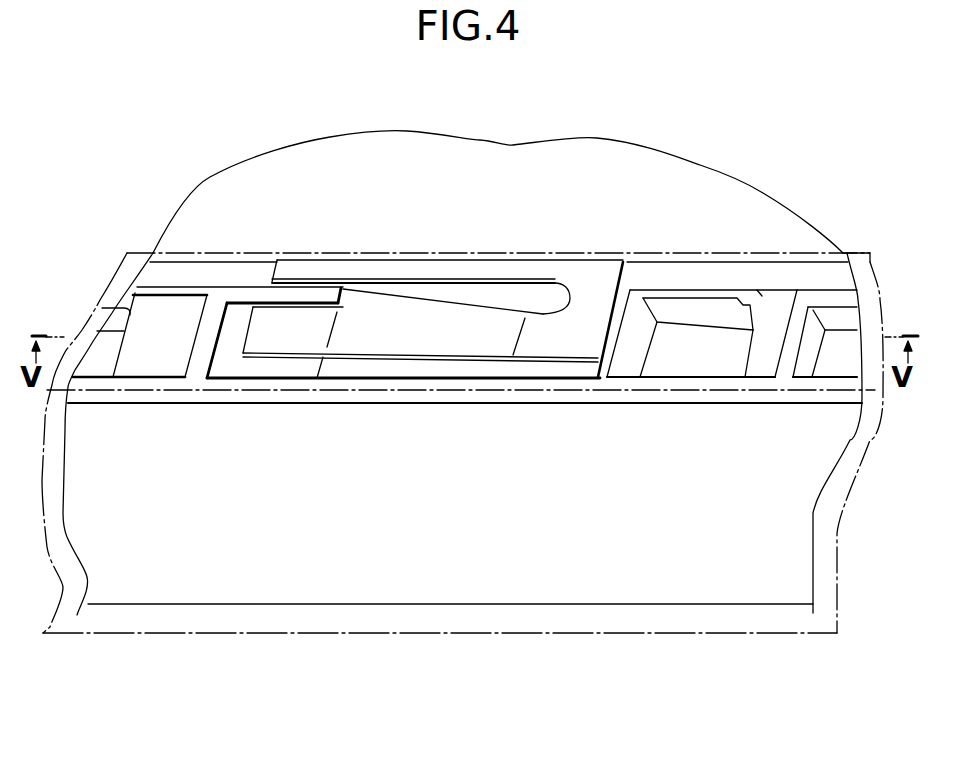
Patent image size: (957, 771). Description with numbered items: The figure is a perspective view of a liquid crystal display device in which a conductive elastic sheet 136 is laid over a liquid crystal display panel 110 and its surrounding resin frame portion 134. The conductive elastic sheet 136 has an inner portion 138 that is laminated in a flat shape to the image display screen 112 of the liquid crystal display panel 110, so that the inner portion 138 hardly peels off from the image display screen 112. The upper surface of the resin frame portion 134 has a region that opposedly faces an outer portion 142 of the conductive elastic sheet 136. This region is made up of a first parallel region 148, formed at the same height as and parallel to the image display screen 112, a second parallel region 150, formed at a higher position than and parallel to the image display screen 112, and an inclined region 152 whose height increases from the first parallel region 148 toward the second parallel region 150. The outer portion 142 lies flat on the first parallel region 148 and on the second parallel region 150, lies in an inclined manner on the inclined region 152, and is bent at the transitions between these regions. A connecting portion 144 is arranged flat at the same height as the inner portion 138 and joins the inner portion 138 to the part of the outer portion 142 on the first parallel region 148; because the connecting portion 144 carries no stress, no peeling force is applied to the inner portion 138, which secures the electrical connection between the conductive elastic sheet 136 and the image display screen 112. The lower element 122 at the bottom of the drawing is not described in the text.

The liquid crystal display panel 110 is at (697, 180).
The image display screen 112 is at (404, 211).
The bottom wall 122 is at (127, 633).
The resin frame portion 134 is at (212, 308).
The conductive elastic sheet 136 is at (548, 365).
The inner portion 138 is at (592, 283).
The outer portion 142 is at (577, 347).
The connecting portion 144 is at (580, 297).
The first parallel region 148 is at (525, 366).
The second parallel region 150 is at (252, 366).
The inclined region 152 is at (407, 366).